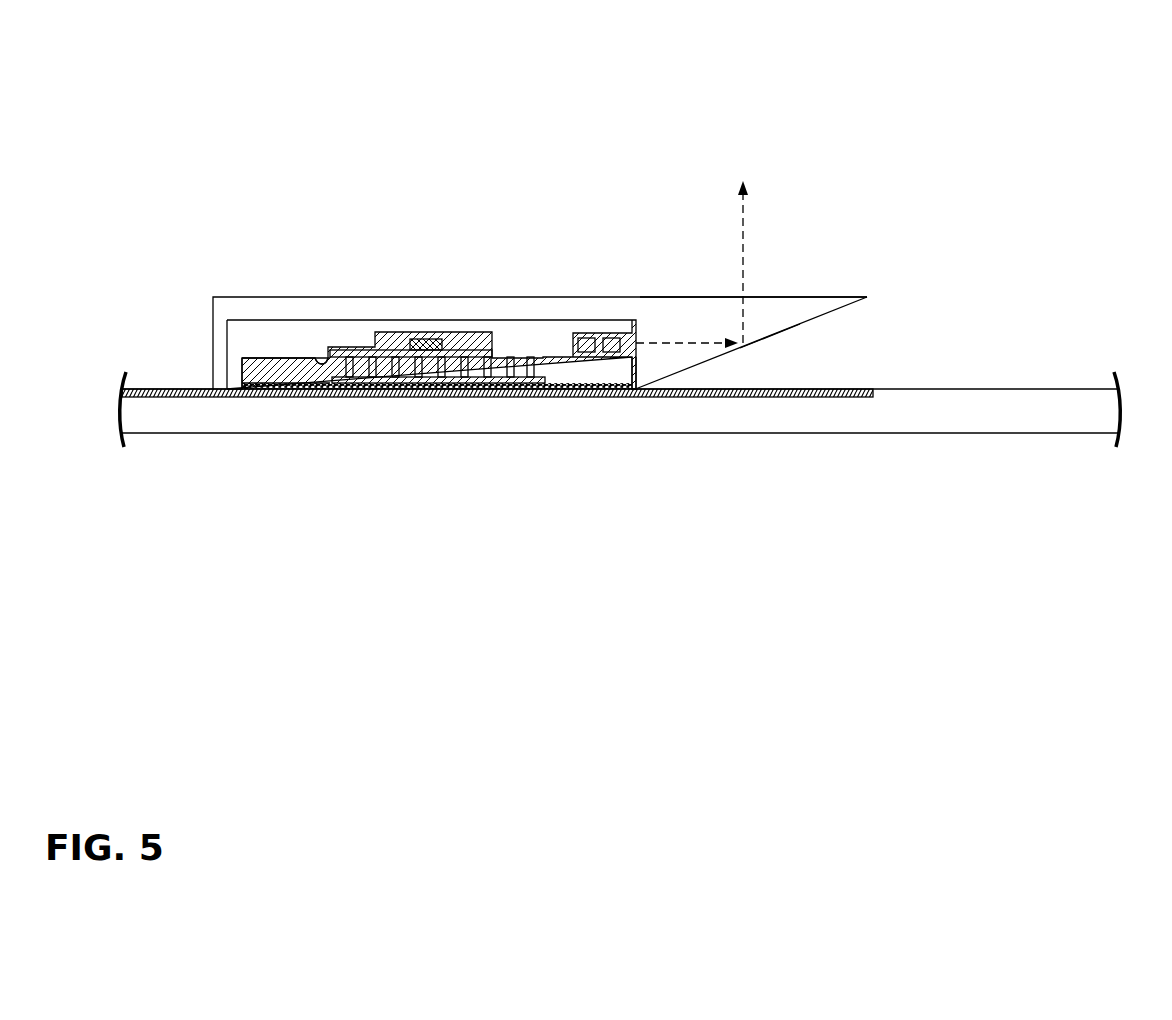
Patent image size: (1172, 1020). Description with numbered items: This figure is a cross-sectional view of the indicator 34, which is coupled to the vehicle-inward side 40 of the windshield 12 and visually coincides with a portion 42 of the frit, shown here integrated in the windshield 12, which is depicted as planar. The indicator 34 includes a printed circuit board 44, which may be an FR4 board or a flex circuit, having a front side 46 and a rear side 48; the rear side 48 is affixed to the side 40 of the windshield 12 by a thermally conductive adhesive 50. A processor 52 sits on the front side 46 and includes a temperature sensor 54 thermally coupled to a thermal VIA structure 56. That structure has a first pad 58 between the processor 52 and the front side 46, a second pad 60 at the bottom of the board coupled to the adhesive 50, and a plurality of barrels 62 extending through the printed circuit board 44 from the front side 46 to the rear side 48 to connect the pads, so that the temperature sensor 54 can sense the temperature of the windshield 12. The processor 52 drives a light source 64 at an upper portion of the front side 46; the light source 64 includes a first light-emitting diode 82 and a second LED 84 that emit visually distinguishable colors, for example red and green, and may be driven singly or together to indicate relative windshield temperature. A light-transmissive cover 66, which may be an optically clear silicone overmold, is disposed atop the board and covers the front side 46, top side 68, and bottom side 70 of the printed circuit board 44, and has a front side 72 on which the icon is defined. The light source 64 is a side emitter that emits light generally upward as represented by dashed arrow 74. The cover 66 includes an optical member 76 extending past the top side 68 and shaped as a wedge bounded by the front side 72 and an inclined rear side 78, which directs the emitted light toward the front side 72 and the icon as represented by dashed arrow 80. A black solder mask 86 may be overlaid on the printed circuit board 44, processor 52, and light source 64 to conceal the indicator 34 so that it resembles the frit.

The windshield 12 is at (1050, 433).
The indicator 34 is at (835, 135).
The vehicle-inward side 40 is at (1020, 389).
The portion of the frit 42 is at (817, 397).
The printed circuit board 44 is at (302, 368).
The front side 46 is at (315, 355).
The rear side 48 is at (283, 370).
The thermally conductive adhesive 50 is at (270, 338).
The processor 52 is at (455, 338).
The temperature sensor 54 is at (446, 352).
The thermal VIA structure 56 is at (479, 340).
The first pad 58 is at (388, 340).
The second pad 60 is at (388, 377).
The barrels 62 is at (428, 377).
The light source 64 is at (626, 340).
The light-transmissive cover 66 is at (183, 285).
The top side 68 is at (633, 368).
The bottom side 70 is at (258, 397).
The front side of the cover 72 is at (778, 297).
The dashed arrow 74 is at (665, 343).
The optical member 76 is at (787, 312).
The rear side of the cover 78 is at (782, 330).
The dashed arrow 80 is at (743, 223).
The first light-emitting diode 82 is at (586, 352).
The second LED 84 is at (611, 352).
The black solder mask 86 is at (232, 340).